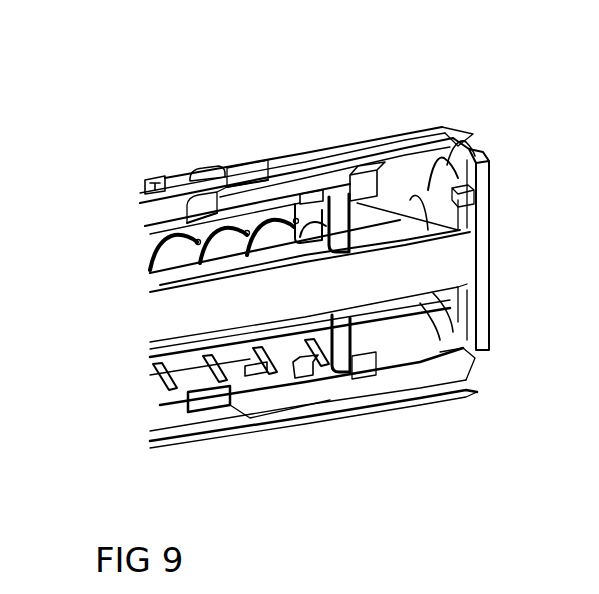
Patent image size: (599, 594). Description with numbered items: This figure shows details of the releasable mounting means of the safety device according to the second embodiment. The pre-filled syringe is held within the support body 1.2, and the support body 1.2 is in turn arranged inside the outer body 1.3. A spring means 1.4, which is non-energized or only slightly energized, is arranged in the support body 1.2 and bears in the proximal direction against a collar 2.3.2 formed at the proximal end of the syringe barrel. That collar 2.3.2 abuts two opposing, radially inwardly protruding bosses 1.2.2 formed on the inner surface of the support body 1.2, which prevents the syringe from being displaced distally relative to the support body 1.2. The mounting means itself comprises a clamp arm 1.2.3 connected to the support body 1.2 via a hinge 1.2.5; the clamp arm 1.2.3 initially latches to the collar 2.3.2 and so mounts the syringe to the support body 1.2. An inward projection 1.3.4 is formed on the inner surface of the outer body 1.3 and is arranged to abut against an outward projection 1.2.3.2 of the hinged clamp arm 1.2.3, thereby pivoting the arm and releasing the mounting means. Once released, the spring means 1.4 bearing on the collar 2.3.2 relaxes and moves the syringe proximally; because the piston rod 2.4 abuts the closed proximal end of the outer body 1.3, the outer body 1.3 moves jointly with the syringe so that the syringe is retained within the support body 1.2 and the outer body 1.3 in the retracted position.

The support body 1.2 is at (145, 228).
The outer body 1.3 is at (410, 138).
The inward projection 1.3.4 is at (250, 190).
The bosses 1.2.2 is at (313, 205).
The clamp arm 1.2.3 is at (367, 185).
The outward projection 1.2.3.2 is at (185, 176).
The spring means 1.4 is at (175, 388).
The piston rod 2.4 is at (158, 318).
The hinge 1.2.5 is at (263, 376).
The collar 2.3.2 is at (340, 374).